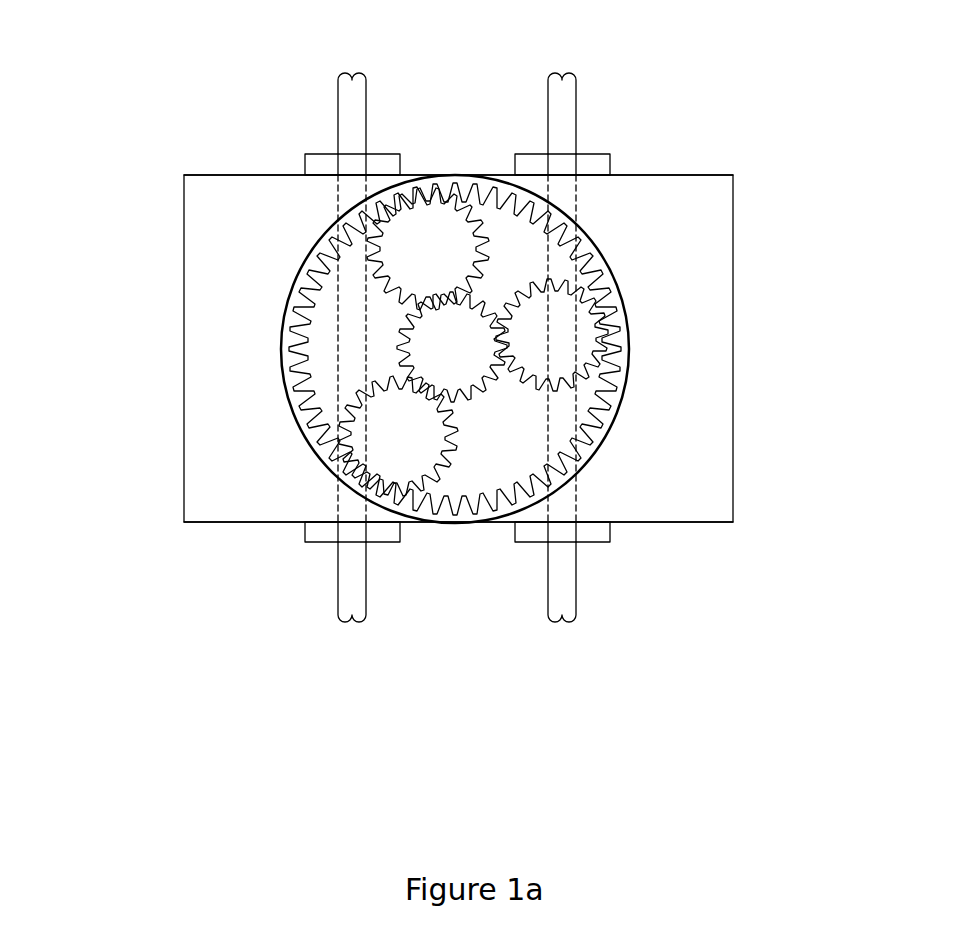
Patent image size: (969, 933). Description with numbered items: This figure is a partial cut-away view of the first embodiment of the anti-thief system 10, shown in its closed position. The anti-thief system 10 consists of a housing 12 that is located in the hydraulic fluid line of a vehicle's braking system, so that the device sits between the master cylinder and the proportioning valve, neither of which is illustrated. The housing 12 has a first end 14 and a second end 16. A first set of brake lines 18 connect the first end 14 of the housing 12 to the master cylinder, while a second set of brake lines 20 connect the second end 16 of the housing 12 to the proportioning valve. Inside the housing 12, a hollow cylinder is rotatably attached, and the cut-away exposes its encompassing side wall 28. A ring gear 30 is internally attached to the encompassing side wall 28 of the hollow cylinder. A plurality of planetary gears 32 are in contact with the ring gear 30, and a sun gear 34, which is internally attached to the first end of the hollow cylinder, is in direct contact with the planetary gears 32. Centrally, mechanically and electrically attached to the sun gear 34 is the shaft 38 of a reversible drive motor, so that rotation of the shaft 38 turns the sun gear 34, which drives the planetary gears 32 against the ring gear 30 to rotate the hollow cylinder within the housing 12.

The anti-thief system 10 is at (228, 79).
The housing 12 is at (205, 327).
The first end 14 is at (665, 193).
The second end 16 is at (700, 515).
The first set of brake lines 18 is at (555, 93).
The second set of brake lines 20 is at (557, 575).
The encompassing side wall 28 is at (625, 311).
The ring gear 30 is at (625, 397).
The planetary gears 32 is at (400, 251).
The sun gear 34 is at (428, 368).
The shaft 38 is at (453, 347).